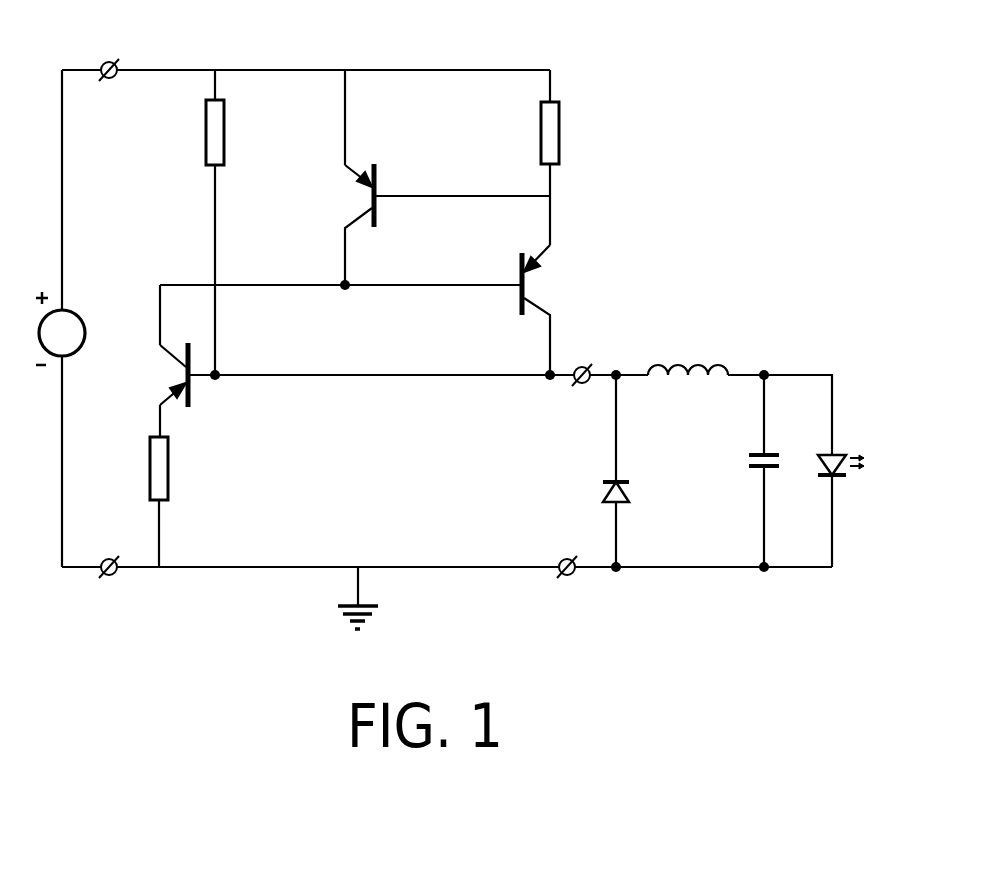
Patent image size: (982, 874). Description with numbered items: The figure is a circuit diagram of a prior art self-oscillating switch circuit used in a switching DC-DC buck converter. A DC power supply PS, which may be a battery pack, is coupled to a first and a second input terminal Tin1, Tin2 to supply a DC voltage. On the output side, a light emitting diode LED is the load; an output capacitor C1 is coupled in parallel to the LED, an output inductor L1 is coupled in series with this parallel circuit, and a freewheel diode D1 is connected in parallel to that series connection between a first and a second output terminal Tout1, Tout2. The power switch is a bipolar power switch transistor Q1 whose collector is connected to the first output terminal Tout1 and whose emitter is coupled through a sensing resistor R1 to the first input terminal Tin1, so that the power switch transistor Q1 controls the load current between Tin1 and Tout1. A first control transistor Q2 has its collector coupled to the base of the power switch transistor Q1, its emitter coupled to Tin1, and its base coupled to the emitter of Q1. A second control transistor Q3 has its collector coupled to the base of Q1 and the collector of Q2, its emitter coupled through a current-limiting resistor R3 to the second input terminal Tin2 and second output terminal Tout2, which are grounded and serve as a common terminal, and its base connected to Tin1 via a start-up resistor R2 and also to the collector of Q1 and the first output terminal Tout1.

The first input terminal Tin1 is at (103, 63).
The second input terminal Tin2 is at (106, 577).
The first output terminal Tout1 is at (585, 365).
The second output terminal Tout2 is at (565, 577).
The DC power supply PS is at (86, 333).
The sensing resistor R1 is at (528, 133).
The start-up resistor R2 is at (193, 132).
The current-limiting resistor R3 is at (138, 468).
The power switch transistor Q1 is at (553, 310).
The first control transistor Q2 is at (344, 224).
The second control transistor Q3 is at (158, 375).
The output inductor L1 is at (705, 366).
The freewheel diode D1 is at (641, 491).
The output capacitor C1 is at (744, 463).
The light emitting diode LED is at (859, 483).